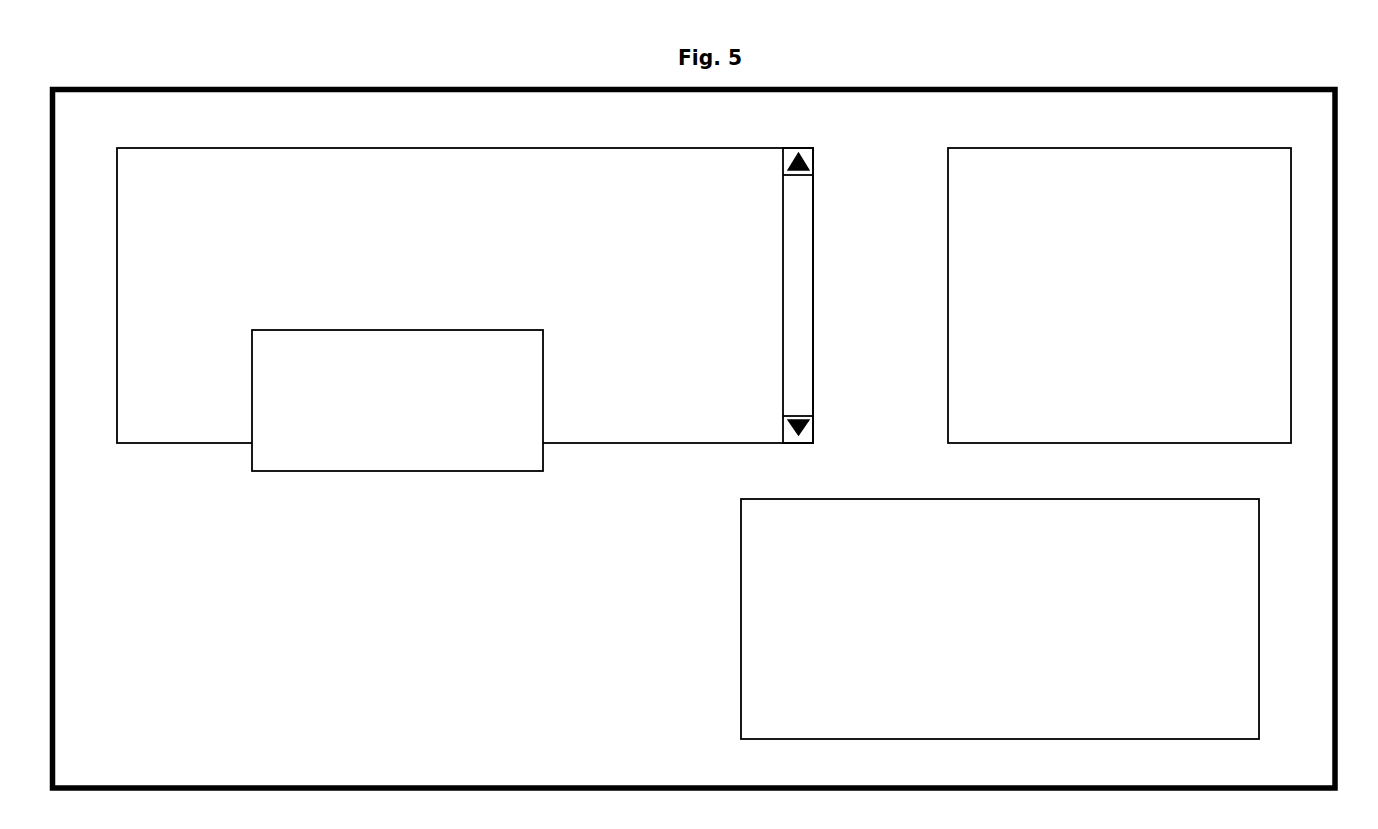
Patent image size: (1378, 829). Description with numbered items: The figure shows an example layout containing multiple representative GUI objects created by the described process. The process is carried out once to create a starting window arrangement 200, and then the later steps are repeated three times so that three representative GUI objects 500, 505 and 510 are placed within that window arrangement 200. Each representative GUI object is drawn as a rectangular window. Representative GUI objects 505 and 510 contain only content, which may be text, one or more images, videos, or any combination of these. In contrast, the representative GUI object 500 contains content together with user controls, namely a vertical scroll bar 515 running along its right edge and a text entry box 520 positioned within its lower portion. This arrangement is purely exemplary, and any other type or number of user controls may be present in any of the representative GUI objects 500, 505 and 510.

The starting window arrangement 200 is at (307, 88).
The representative GUI object 500 is at (470, 148).
The representative GUI object 505 is at (1133, 148).
The representative GUI object 510 is at (967, 499).
The vertical scroll bar 515 is at (800, 262).
The text entry box 520 is at (538, 292).